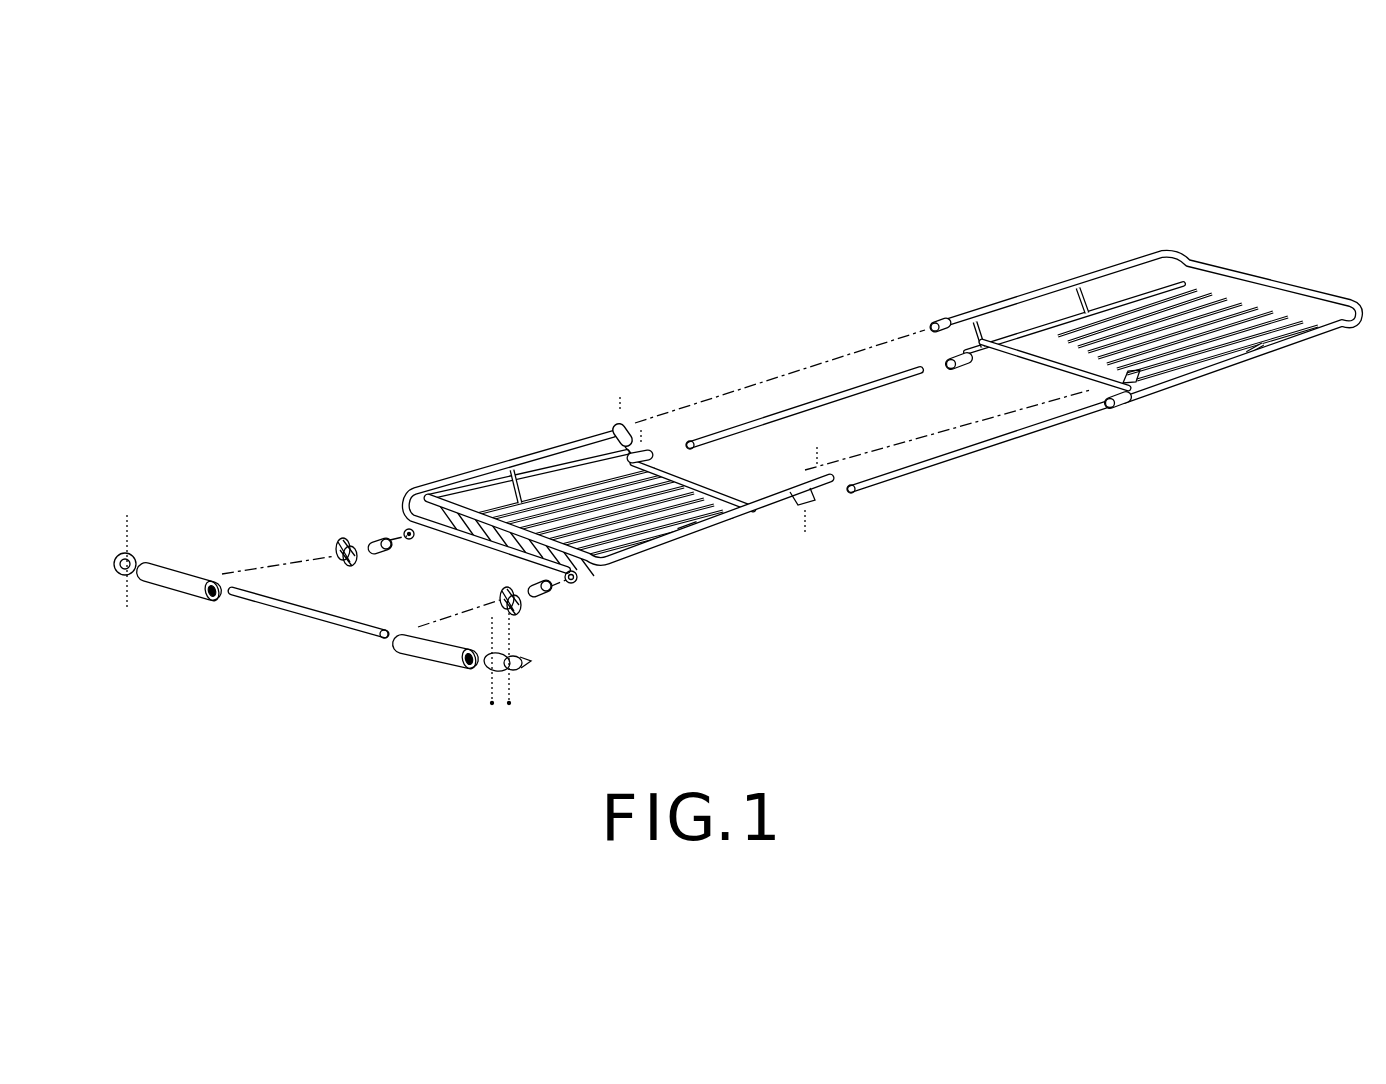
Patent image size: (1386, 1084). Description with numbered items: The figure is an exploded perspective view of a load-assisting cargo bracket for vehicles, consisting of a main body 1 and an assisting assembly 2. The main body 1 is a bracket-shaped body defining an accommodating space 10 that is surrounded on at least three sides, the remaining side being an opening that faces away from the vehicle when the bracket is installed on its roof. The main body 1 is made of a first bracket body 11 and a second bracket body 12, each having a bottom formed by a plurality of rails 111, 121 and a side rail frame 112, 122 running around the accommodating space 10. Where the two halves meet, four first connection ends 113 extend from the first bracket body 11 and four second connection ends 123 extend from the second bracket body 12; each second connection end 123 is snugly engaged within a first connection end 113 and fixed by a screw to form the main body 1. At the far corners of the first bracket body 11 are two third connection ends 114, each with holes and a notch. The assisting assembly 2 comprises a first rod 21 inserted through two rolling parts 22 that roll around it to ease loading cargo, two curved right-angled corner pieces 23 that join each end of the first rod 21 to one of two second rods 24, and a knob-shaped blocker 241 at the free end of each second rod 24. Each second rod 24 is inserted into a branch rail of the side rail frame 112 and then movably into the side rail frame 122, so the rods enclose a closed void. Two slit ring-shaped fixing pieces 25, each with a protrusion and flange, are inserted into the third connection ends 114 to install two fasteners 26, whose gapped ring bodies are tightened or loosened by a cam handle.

The main body 1 is at (1210, 533).
The accommodating space 10 is at (1138, 283).
The first bracket body 11 is at (747, 476).
The rails 111 is at (537, 503).
The side rail frame 112 is at (748, 502).
The first connection ends 113 is at (607, 423).
The third connection ends 114 is at (583, 582).
The second bracket body 12 is at (1090, 357).
The rails 121 is at (1176, 297).
The side rail frame 122 is at (1310, 327).
The second connection ends 123 is at (940, 316).
The assisting assembly 2 is at (537, 190).
The first rod 21 is at (263, 598).
The rolling parts 22 is at (180, 574).
The corner pieces 23 is at (133, 547).
The second rods 24 is at (790, 406).
The blocker 241 is at (918, 363).
The fixing pieces 25 is at (383, 527).
The fasteners 26 is at (345, 543).